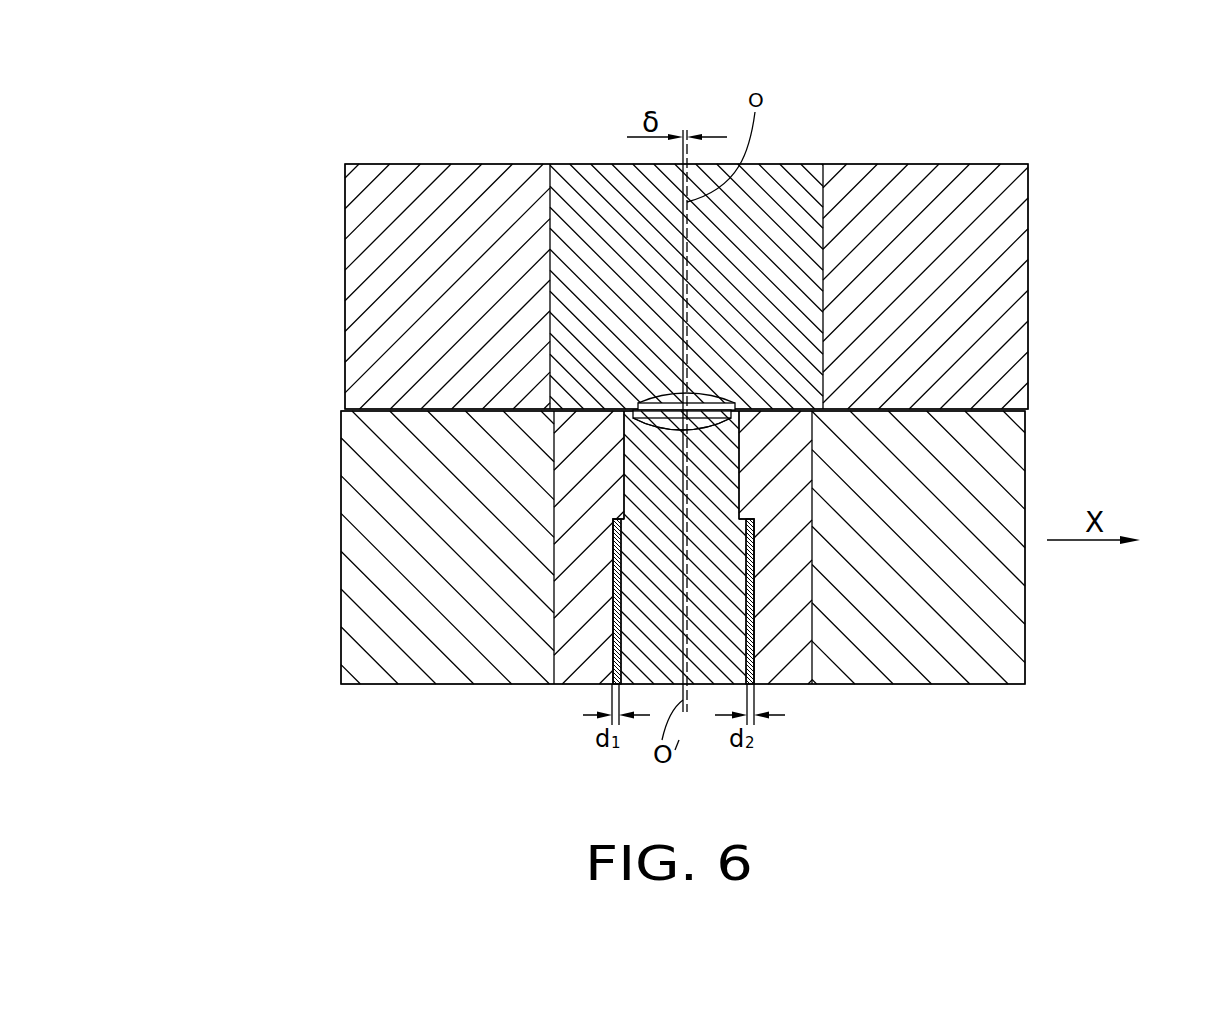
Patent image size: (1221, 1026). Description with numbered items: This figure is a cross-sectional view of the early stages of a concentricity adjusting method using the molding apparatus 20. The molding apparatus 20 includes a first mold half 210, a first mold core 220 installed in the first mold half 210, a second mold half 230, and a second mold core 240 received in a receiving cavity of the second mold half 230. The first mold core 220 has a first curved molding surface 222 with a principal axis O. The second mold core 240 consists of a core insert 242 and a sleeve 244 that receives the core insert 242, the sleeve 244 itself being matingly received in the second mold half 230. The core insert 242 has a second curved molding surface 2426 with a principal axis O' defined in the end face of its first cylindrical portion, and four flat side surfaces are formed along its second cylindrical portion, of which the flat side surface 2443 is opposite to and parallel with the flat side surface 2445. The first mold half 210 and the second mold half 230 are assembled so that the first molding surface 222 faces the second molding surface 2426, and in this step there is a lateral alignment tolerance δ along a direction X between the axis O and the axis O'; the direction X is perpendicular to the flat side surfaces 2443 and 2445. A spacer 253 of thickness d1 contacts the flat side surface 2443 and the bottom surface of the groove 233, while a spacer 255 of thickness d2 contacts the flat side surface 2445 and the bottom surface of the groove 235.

The molding apparatus 20 is at (695, 52).
The first mold half 210 is at (995, 277).
The first mold core 220 is at (773, 220).
The first curved molding surface 222 is at (664, 393).
The second mold half 230 is at (960, 650).
The groove 233 is at (608, 607).
The groove 235 is at (760, 590).
The second mold core 240 is at (1128, 432).
The core insert 242 is at (803, 496).
The sleeve 244 is at (728, 560).
The second curved molding surface 2426 is at (662, 432).
The flat side surface 2443 is at (613, 578).
The flat side surface 2445 is at (754, 604).
The spacer 253 is at (610, 613).
The spacer 255 is at (757, 612).